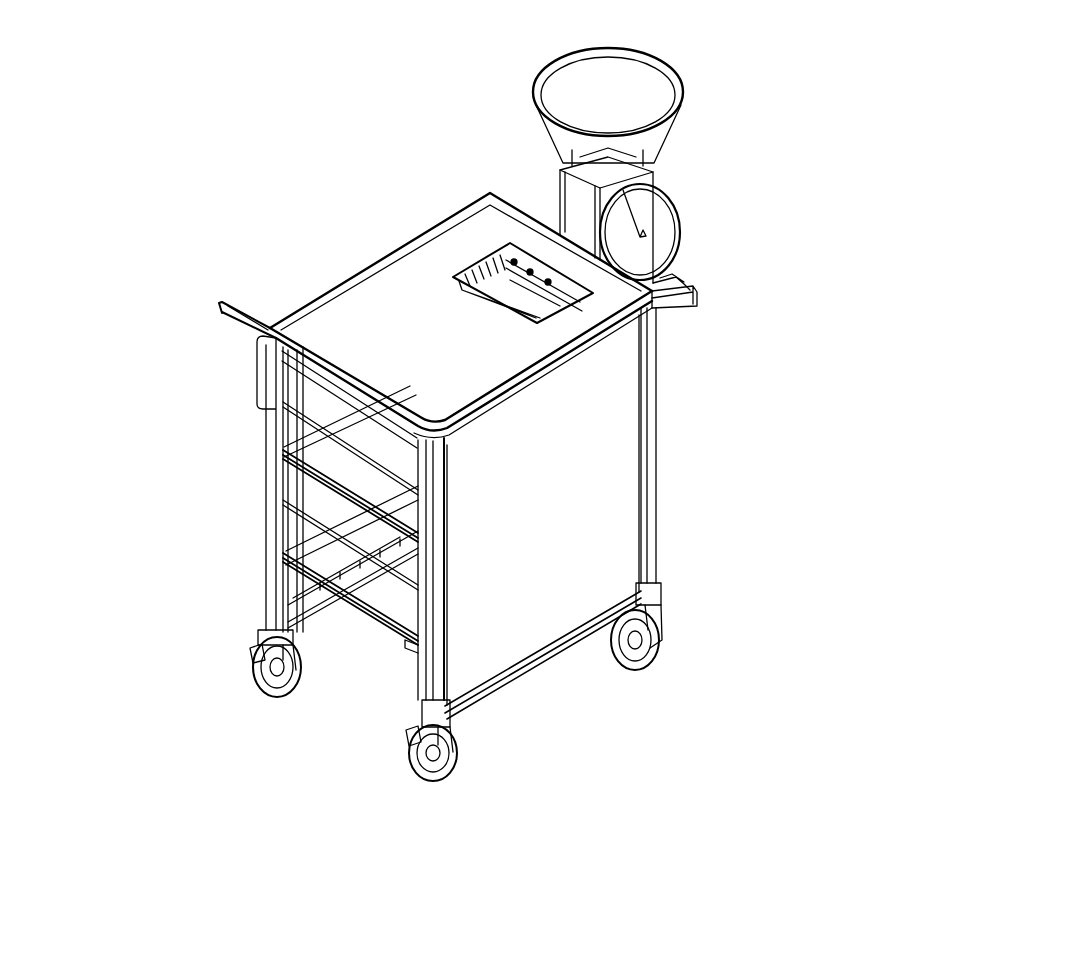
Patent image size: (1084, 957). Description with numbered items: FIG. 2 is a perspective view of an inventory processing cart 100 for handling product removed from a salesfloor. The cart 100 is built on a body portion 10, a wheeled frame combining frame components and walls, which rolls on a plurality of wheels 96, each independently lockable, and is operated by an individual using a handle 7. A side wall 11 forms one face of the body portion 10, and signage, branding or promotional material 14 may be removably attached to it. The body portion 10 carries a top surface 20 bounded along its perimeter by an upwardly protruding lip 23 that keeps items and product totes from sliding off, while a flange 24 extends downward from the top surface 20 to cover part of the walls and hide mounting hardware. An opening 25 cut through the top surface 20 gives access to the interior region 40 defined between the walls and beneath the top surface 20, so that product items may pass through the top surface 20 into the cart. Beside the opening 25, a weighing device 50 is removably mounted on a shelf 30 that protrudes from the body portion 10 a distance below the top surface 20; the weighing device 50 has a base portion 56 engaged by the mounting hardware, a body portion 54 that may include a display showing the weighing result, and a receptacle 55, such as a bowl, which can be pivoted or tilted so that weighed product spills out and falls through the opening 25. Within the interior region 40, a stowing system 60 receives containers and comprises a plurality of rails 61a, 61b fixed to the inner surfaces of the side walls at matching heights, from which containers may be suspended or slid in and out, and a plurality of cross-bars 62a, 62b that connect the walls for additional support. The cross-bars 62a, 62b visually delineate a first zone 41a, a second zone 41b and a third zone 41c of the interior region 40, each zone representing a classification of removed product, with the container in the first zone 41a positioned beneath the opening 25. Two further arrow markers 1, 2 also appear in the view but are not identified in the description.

The inventory processing cart 100 is at (248, 177).
The cart 1 is at (805, 305).
The cart base assembly 2 is at (745, 620).
The handle 7 is at (225, 307).
The body portion 10 is at (622, 562).
The side wall 11 is at (628, 470).
The signage 14 is at (498, 680).
The top surface 20 is at (372, 305).
The lip 23 is at (312, 300).
The flange 24 is at (628, 327).
The opening 25 is at (515, 265).
The shelf 30 is at (688, 300).
The interior region 40 is at (330, 487).
The first zone 41a is at (325, 418).
The second zone 41b is at (310, 522).
The third zone 41c is at (307, 595).
The weighing device 50 is at (658, 218).
The body portion of the weighing device 54 is at (568, 210).
The receptacle 55 is at (620, 78).
The base portion 56 is at (685, 283).
The stowing system 60 is at (408, 578).
The rail 61a is at (340, 425).
The rail 61b is at (345, 520).
The cross-bar 62a is at (320, 578).
The cross-bar 62b is at (382, 610).
The wheel 96 is at (275, 693).